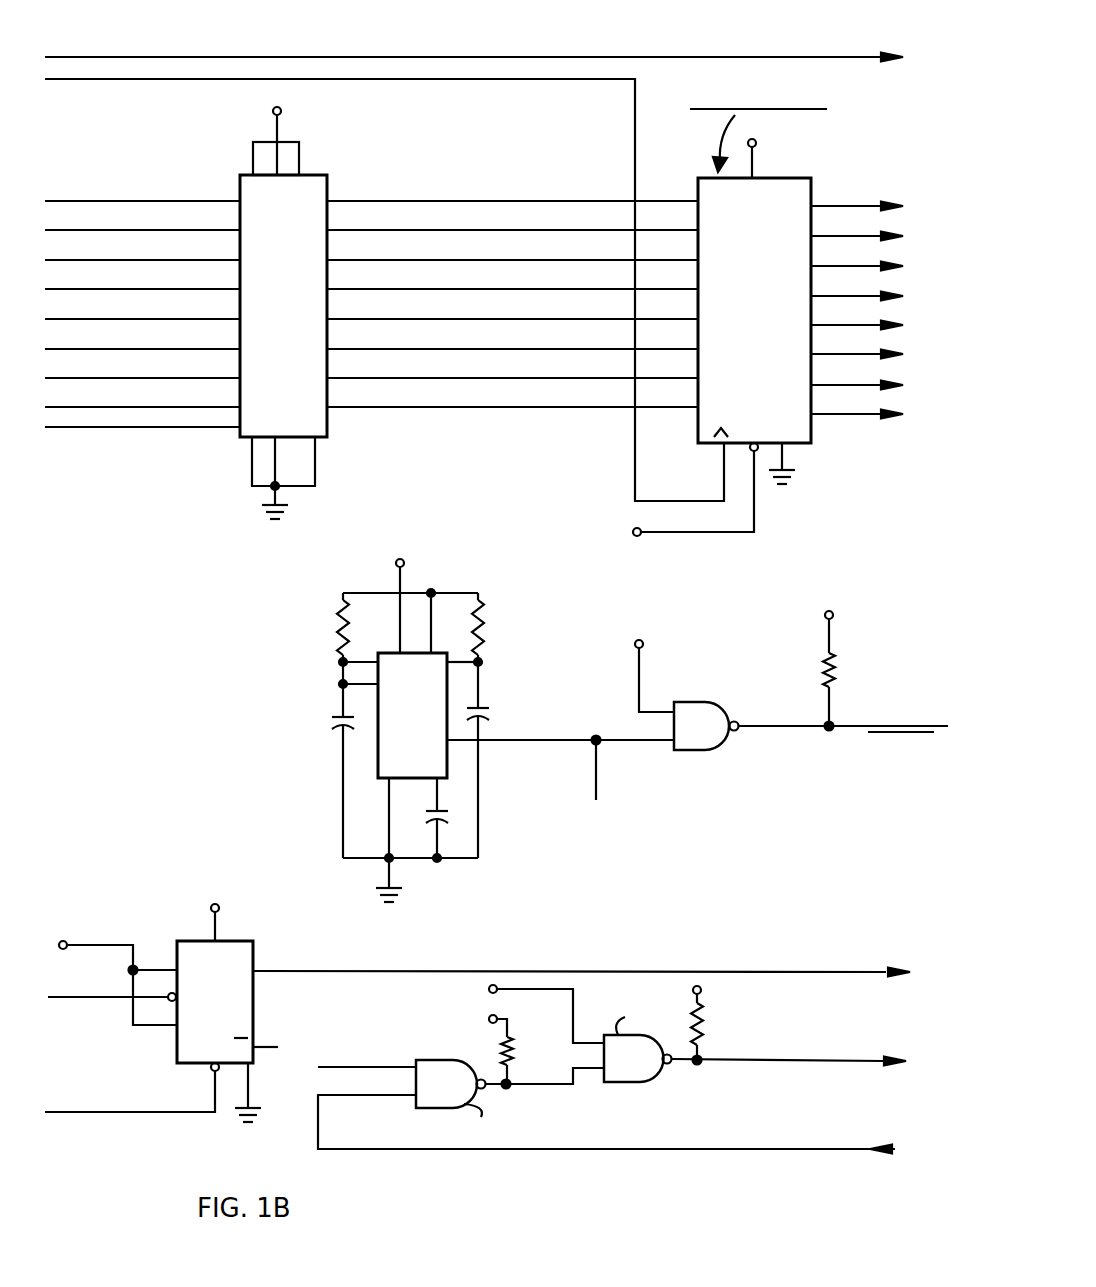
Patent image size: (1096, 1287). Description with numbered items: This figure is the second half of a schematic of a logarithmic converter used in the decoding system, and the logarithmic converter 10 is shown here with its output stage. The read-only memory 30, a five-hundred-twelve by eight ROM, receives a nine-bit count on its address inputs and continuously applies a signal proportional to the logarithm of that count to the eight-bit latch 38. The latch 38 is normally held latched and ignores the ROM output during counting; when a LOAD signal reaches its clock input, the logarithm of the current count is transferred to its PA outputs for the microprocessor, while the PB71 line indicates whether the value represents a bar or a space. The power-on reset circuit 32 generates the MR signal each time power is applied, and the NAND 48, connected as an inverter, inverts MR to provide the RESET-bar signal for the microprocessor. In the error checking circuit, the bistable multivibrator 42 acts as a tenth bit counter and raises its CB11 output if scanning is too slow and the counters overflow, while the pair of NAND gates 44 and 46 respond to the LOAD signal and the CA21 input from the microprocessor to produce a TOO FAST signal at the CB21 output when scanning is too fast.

The data bus lines 10 is at (494, 50).
The read-only memory 30 is at (240, 177).
The power-on reset circuit 32 is at (312, 727).
The eight-bit latch 38 is at (793, 187).
The bistable multivibrator 42 is at (254, 944).
The NAND gate 44 is at (453, 1058).
The NAND gate 46 is at (650, 1073).
The NAND gate 48 is at (721, 737).